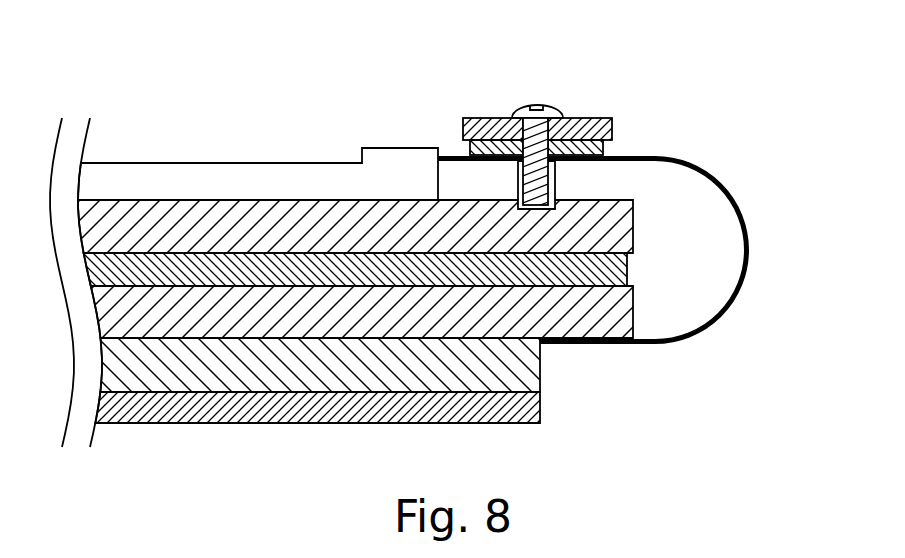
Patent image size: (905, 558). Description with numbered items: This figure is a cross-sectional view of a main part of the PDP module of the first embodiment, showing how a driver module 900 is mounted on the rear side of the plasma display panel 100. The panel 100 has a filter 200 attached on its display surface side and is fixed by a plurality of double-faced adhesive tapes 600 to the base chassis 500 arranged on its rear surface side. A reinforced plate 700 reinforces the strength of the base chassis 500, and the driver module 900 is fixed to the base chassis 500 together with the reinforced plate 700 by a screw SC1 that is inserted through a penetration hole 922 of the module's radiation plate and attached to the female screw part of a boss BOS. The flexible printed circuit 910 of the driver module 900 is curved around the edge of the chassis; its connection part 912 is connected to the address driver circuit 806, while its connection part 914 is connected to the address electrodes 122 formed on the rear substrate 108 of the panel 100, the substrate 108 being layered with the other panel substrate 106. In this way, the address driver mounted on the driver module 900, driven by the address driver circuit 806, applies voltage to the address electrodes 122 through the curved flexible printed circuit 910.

The plasma display panel 100 is at (395, 370).
The first layer of display panel 106 is at (525, 366).
The rear substrate 108 is at (557, 330).
The address electrodes 122 is at (590, 344).
The filter 200 is at (480, 425).
The base chassis 500 is at (633, 216).
The double-faced adhesive tapes 600 is at (627, 266).
The reinforced plate 700 is at (480, 117).
The address driver circuit 806 is at (198, 178).
The driver module 900 is at (605, 152).
The flexible printed circuit 910 is at (737, 302).
The connection part 912 is at (443, 153).
The connection part 914 is at (624, 344).
The penetration holes 922 is at (542, 120).
The screws SC1 is at (533, 103).
The bosses BOS is at (557, 180).